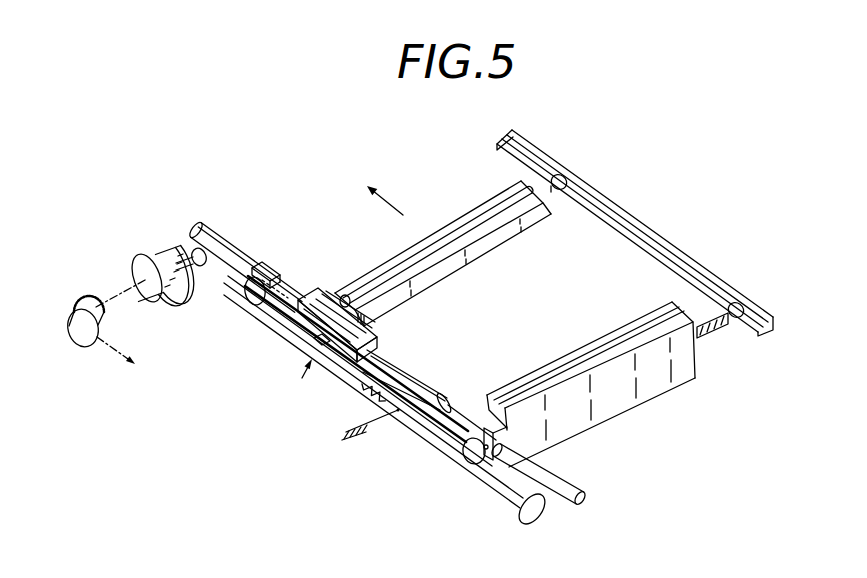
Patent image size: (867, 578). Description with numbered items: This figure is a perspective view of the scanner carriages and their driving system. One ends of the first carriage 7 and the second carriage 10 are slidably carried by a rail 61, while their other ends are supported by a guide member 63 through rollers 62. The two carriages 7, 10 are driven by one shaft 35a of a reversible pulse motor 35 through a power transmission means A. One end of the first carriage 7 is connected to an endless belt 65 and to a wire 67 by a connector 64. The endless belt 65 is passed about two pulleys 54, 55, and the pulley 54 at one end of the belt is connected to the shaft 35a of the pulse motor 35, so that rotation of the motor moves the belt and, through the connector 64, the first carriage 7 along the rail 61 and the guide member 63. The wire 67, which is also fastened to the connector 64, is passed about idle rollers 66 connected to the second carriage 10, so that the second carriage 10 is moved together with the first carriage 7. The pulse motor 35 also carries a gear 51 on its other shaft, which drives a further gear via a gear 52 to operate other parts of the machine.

The first carriage 7 is at (327, 292).
The second carriage 10 is at (672, 378).
The reversible pulse motor 35 is at (151, 254).
The shaft 35a is at (193, 268).
The gear 51 is at (81, 301).
The gear 52 is at (91, 340).
The pulley 54 is at (195, 248).
The pulley 55 is at (521, 515).
The rail 61 is at (570, 483).
The rollers 62 is at (567, 178).
The guide member 63 is at (628, 232).
The connector 64 is at (314, 344).
The endless belt 65 is at (422, 430).
The idle rollers 66 is at (253, 306).
The wire 67 is at (367, 381).
The power transmission means A is at (298, 382).